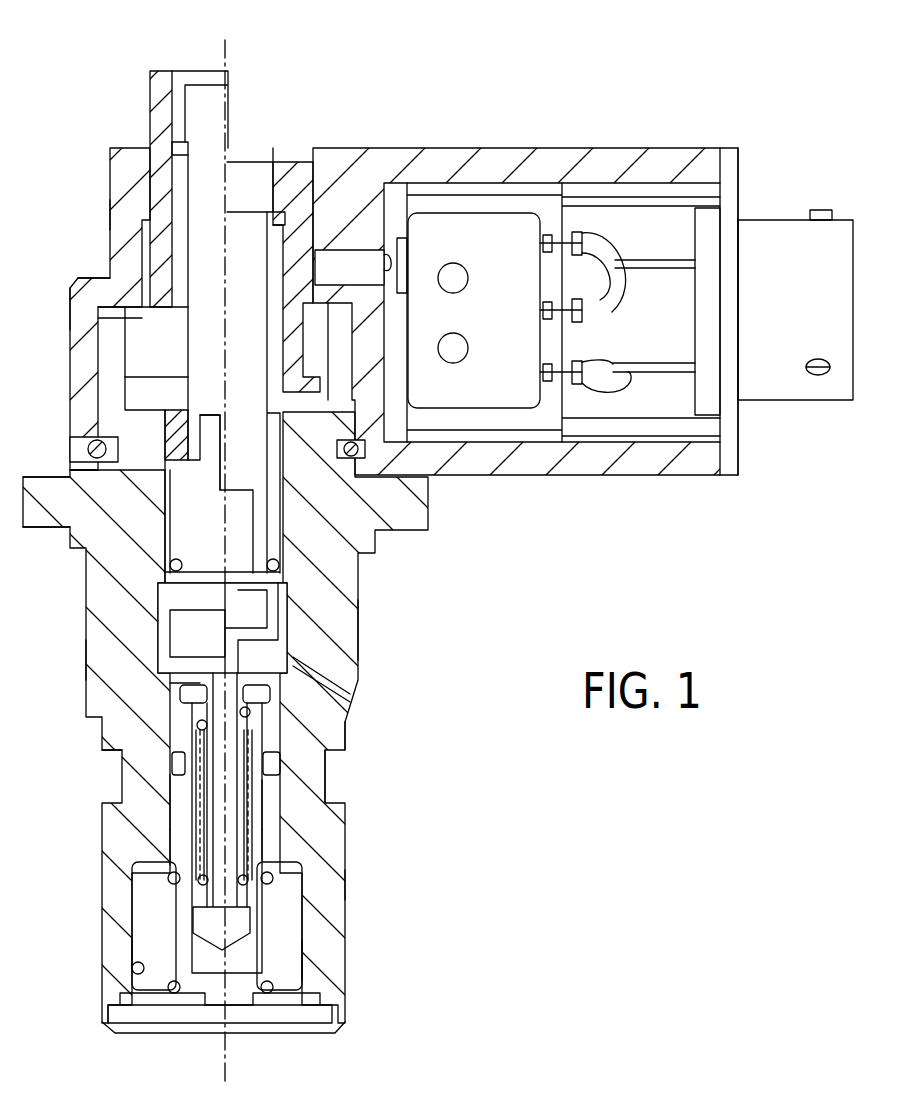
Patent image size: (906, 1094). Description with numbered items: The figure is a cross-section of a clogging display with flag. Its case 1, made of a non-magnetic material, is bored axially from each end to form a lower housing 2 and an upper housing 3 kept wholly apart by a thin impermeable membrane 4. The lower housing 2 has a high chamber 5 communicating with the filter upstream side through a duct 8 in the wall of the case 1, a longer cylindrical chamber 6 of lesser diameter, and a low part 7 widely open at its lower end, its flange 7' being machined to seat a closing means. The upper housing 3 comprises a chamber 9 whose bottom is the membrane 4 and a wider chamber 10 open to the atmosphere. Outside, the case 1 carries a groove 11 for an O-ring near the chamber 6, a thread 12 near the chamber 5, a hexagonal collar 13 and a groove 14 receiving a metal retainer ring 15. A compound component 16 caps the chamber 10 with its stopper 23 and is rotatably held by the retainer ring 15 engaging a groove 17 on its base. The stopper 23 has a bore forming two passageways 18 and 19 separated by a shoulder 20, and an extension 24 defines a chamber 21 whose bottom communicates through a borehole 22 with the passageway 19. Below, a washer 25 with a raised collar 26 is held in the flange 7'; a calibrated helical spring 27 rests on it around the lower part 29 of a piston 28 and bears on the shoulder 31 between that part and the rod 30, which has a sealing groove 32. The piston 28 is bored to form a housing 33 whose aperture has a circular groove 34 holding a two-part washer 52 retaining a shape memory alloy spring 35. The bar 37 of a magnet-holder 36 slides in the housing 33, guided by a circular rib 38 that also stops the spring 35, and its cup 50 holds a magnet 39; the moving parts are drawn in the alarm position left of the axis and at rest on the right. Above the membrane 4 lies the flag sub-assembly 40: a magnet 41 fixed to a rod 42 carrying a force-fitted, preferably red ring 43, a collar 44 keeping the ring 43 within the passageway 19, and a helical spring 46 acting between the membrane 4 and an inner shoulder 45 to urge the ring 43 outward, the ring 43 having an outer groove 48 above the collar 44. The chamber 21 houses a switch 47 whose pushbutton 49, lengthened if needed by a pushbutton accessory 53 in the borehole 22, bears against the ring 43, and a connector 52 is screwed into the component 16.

The case 1 is at (348, 880).
The lower housing 2 is at (290, 955).
The upper housing 3 is at (255, 190).
The impermeable membrane 4 is at (300, 592).
The high chamber 5 is at (283, 648).
The cylindrical chamber 6 is at (270, 790).
The low chamber 7 is at (127, 988).
The flange 7' is at (244, 1030).
The duct 8 is at (352, 702).
The chamber 9 is at (182, 525).
The chamber 10 is at (100, 322).
The groove 11 is at (122, 780).
The thread 12 is at (110, 660).
The hexagonal collar 13 is at (45, 520).
The groove 14 is at (105, 437).
The metal retainer ring 15 is at (88, 449).
The compound component 16 is at (553, 147).
The groove 17 is at (358, 452).
The passageway 18 is at (318, 340).
The passageway 19 is at (110, 215).
The shoulder 20 is at (110, 292).
The chamber 21 is at (670, 188).
The borehole 22 is at (340, 185).
The stopper 23 is at (110, 148).
The extension 24 is at (600, 196).
The washer 25 is at (143, 1010).
The collar 26 is at (200, 1010).
The calibrated helical spring 27 is at (165, 880).
The piston 28 is at (178, 911).
The lower part of piston 29 is at (132, 955).
The rod 30 is at (175, 815).
The shoulder 31 is at (175, 855).
The groove 32 is at (175, 770).
The housing 33 is at (287, 953).
The circular groove 34 is at (192, 700).
The spring 35 is at (272, 850).
The magnet-holder 36 is at (262, 735).
The bar 37 is at (255, 815).
The circular rib 38 is at (235, 920).
The magnet 39 is at (183, 690).
The sub-assembly 40 is at (160, 377).
The magnet 41 is at (207, 472).
The rod 42 is at (212, 160).
The ring 43 is at (168, 95).
The collar 44 is at (70, 328).
The shoulder 45 is at (182, 142).
The helical spring 46 is at (290, 215).
The switch 47 is at (485, 225).
The groove 48 is at (310, 325).
The pushbutton 49 is at (402, 262).
The cup 50 is at (170, 630).
The two-part washer 52 is at (778, 235).
The pushbutton accessory 53 is at (365, 262).